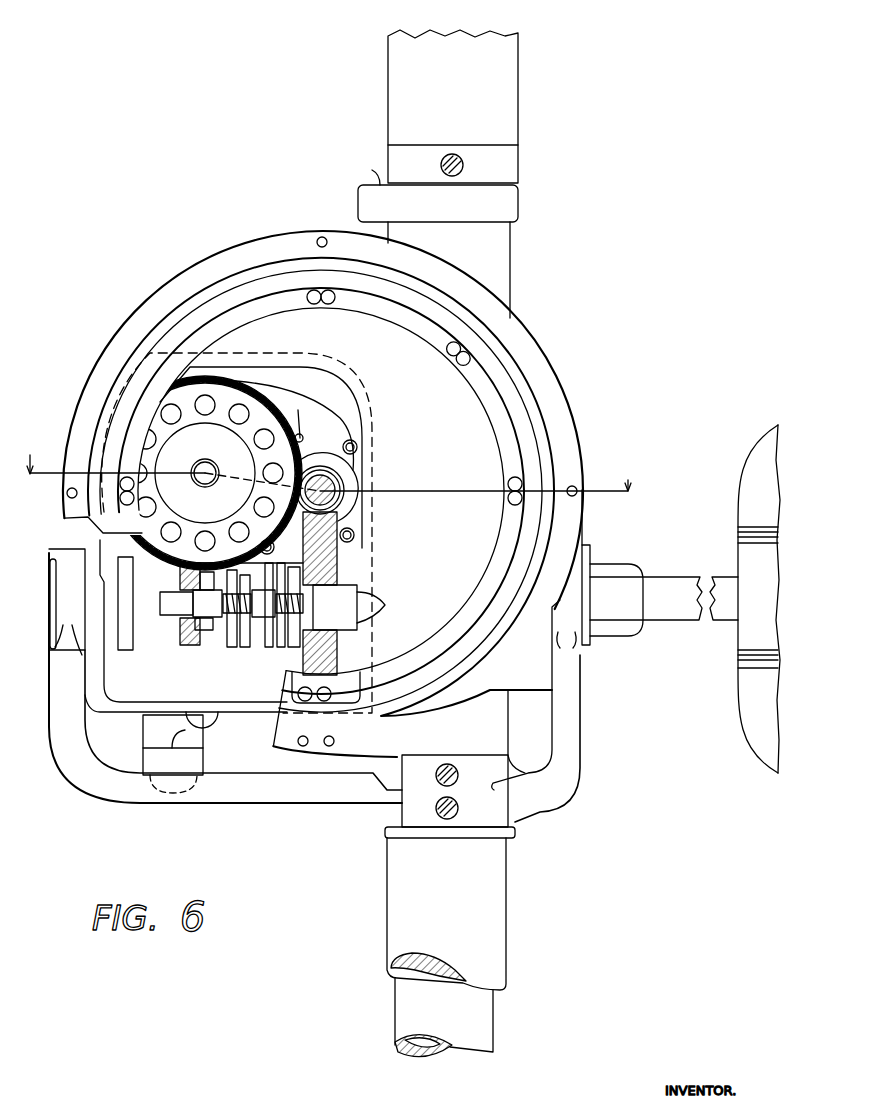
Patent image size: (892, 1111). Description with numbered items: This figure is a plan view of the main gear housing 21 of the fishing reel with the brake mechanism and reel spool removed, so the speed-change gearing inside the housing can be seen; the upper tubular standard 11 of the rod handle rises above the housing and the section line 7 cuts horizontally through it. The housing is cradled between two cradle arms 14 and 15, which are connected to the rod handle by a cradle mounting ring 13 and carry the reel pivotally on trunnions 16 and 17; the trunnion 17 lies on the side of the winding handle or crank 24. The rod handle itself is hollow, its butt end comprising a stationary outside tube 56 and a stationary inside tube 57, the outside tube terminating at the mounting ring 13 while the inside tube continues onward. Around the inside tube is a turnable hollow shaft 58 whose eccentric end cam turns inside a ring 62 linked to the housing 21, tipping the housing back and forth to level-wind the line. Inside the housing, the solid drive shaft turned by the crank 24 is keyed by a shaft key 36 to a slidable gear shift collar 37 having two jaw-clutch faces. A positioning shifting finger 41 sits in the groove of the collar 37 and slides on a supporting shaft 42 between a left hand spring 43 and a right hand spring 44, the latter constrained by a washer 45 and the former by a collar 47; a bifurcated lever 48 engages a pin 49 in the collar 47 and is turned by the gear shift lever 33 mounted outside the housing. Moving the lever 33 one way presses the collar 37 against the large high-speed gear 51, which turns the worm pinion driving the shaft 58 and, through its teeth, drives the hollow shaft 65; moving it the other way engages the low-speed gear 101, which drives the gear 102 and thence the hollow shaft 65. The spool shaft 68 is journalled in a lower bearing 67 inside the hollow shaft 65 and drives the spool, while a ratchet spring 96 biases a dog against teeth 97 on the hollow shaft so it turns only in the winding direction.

The upper tubular standard 11 is at (508, 68).
The cradle mounting ring 13 is at (525, 828).
The cradle arm 14 is at (237, 797).
The cradle arm 15 is at (570, 785).
The trunnion 16 is at (49, 550).
The trunnion 17 is at (583, 558).
The main gear housing 21 is at (556, 395).
The winding handle or crank 24 is at (740, 517).
The gear shift lever 33 is at (200, 757).
The shaft key 36 is at (243, 625).
The gear shift collar 37 is at (268, 630).
The positioning shifting finger 41 is at (272, 650).
The supporting shaft 42 is at (175, 612).
The left hand spring 43 is at (236, 625).
The right hand spring 44 is at (296, 625).
The washer 45 is at (328, 590).
The collar 47 is at (222, 603).
The bifurcated lever 48 is at (192, 628).
The pin 49 is at (205, 632).
The high-speed gear 51 is at (338, 545).
The stationary outside tube 56 is at (393, 925).
The stationary inside tube 57 is at (406, 1003).
The turnable hollow shaft 58 is at (365, 169).
The ring 62 is at (519, 202).
The hollow shaft 65 is at (335, 501).
The lower bearing 67 is at (345, 489).
The spool shaft 68 is at (343, 480).
The section line 7- 7 is at (327, 461).
The spring 96 is at (312, 430).
The teeth 97 is at (331, 463).
The low-speed gear 101 is at (178, 570).
The gear 102 is at (226, 398).